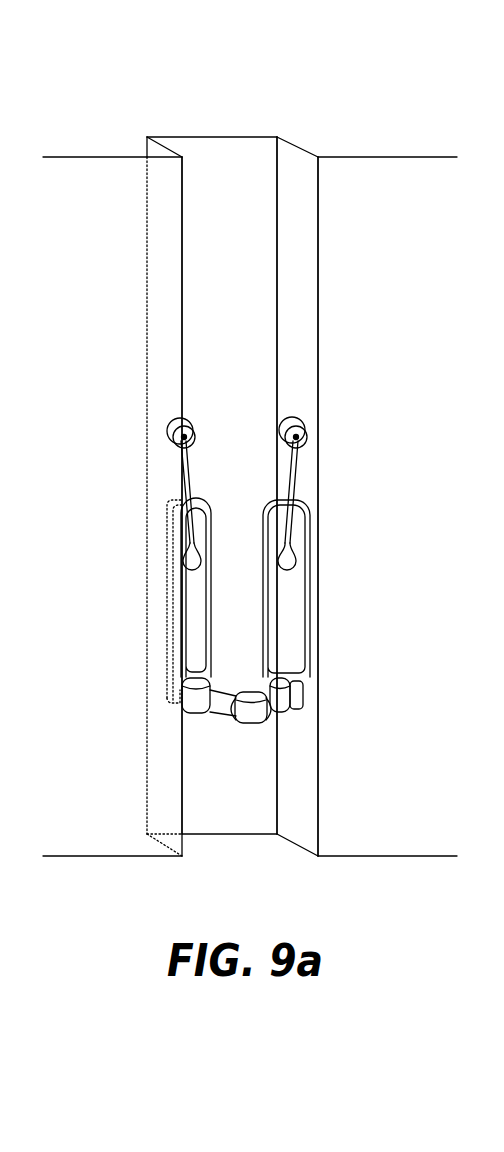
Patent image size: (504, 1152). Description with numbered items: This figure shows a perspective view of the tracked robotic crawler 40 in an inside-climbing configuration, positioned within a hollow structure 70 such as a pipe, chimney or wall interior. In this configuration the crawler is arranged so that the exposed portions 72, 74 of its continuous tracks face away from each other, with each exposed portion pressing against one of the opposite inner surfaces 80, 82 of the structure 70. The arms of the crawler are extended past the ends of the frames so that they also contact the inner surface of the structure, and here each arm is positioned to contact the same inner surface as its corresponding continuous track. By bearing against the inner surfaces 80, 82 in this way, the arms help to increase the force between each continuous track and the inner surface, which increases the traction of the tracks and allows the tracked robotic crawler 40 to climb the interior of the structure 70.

The tracked robotic crawler 40 is at (200, 88).
The structure 70 is at (165, 168).
The inner surface 80 is at (172, 243).
The inner surface 82 is at (309, 278).
The exposed portion of continuous track 72 is at (167, 600).
The exposed portion of continuous track 74 is at (307, 603).